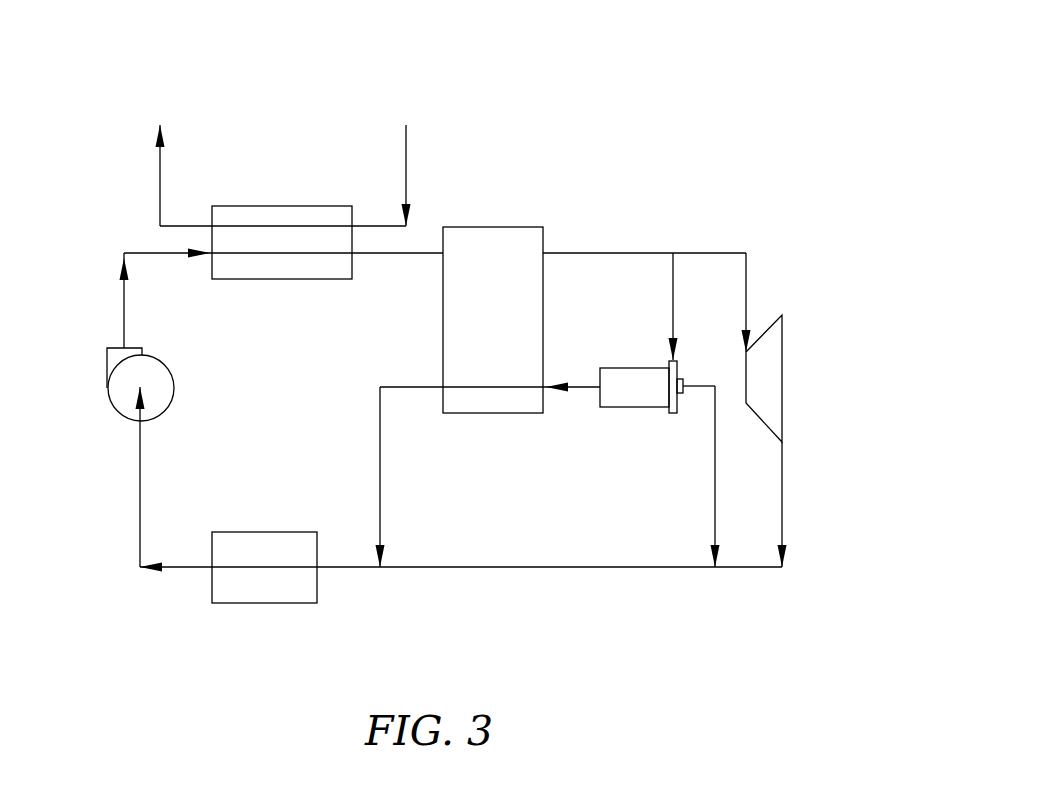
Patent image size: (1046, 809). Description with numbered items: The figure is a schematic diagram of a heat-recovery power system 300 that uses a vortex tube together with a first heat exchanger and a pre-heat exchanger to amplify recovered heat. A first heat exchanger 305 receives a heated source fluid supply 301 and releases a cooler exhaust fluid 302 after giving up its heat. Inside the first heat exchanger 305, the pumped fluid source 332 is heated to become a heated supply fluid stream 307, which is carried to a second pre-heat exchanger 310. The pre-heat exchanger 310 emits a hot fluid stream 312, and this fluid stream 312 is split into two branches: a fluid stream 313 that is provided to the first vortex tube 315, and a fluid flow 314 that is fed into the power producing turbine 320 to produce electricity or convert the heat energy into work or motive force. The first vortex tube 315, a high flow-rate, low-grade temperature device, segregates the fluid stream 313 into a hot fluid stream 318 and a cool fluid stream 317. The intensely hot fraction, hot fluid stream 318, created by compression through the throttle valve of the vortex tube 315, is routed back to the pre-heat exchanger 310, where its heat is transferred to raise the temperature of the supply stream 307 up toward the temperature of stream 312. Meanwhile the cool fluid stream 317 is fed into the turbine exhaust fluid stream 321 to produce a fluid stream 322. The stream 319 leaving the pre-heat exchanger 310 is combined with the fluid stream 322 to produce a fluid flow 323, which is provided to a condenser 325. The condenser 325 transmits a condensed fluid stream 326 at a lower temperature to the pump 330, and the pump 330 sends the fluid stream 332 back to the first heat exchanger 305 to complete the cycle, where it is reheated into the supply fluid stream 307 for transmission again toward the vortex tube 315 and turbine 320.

The system 300 is at (658, 98).
The heated source fluid supply 301 is at (406, 170).
The cooler exhaust fluid 302 is at (160, 191).
The first heat exchanger 305 is at (283, 206).
The heated supply fluid stream 307 is at (398, 253).
The second pre-heat exchanger 310 is at (482, 227).
The fluid stream 312 is at (647, 253).
The fluid stream 313 is at (673, 307).
The fluid flow 314 is at (746, 287).
The first vortex tube 315 is at (634, 408).
The cool fluid stream 317 is at (715, 475).
The hot fluid stream 318 is at (585, 388).
The hot fluid stream 319 is at (380, 478).
The power producing turbine 320 is at (782, 379).
The exhaust fluid stream 321 is at (748, 567).
The fluid stream 322 is at (512, 567).
The fluid flow 323 is at (358, 567).
The condenser 325 is at (265, 603).
The condensed fluid stream 326 is at (140, 480).
The pump 330 is at (107, 388).
The fluid source 332 is at (124, 317).